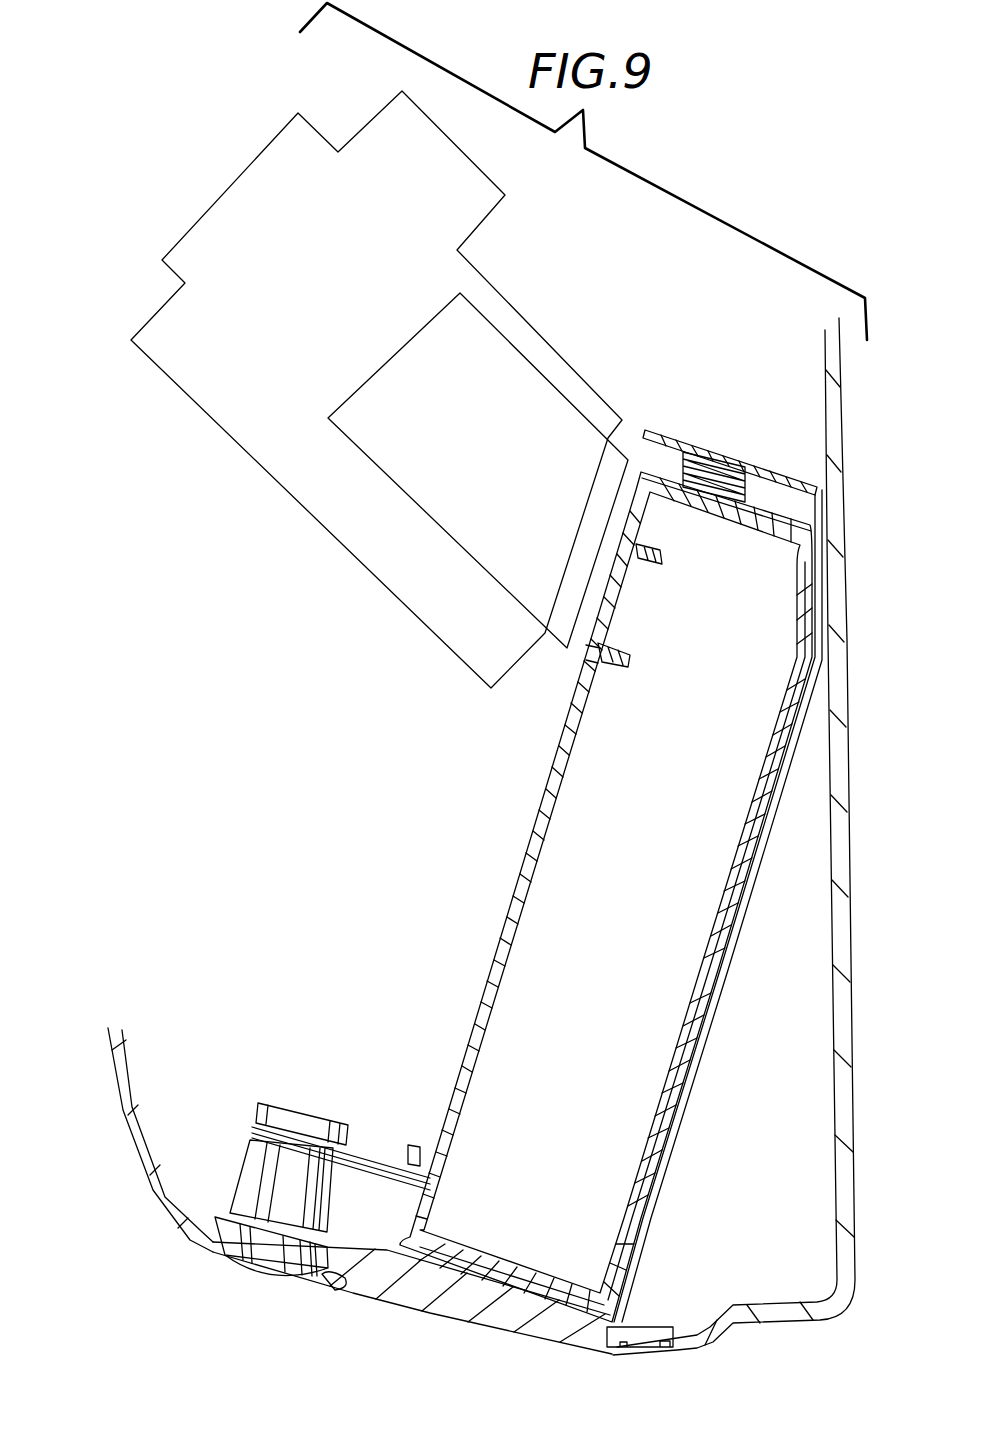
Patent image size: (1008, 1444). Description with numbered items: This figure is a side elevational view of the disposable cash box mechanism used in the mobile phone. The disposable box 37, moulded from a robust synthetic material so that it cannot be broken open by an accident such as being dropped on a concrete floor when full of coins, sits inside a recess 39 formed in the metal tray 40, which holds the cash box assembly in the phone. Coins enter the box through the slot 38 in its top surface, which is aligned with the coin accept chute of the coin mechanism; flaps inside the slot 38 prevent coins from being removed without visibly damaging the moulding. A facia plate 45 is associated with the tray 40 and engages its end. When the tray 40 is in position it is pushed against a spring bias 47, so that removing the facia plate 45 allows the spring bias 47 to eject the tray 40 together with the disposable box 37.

The disposable box 37 is at (527, 872).
The slot 38 is at (618, 630).
The recess 39 is at (602, 1085).
The metal tray 40 is at (718, 1003).
The facia plate 45 is at (255, 1172).
The spring bias 47 is at (712, 455).